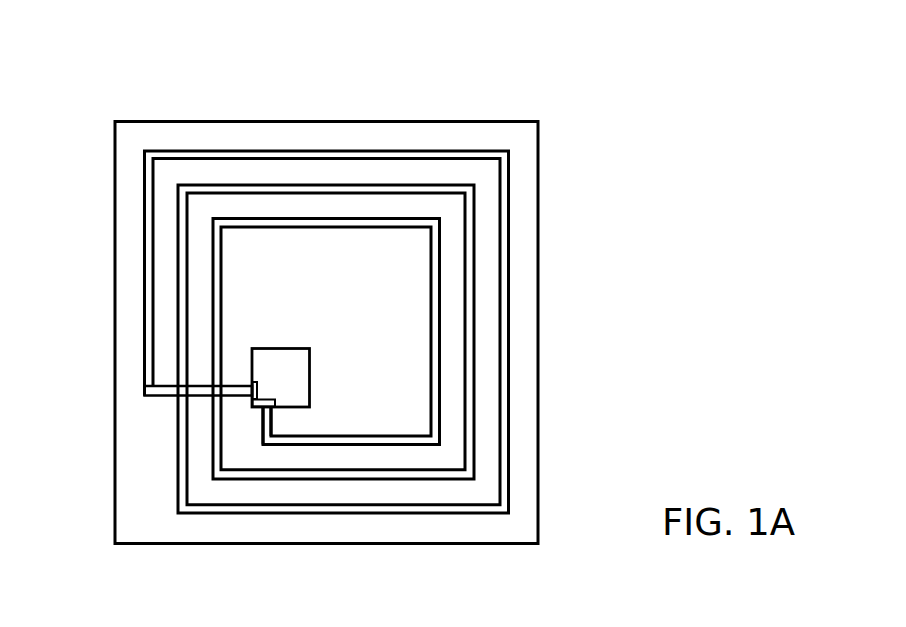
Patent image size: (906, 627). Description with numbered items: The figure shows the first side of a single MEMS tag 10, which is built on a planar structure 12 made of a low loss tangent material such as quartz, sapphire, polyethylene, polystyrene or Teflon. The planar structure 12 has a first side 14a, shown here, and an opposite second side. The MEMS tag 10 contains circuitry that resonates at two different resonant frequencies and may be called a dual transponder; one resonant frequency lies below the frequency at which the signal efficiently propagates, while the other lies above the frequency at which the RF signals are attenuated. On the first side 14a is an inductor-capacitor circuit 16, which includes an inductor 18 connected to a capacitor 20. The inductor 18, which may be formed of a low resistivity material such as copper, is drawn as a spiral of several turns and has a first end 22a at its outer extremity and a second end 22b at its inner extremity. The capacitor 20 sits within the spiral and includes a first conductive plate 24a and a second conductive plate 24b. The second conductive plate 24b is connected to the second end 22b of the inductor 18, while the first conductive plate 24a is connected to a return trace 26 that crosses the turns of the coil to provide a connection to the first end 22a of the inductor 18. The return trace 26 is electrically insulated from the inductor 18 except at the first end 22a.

The MEMS tag 10 is at (327, 291).
The planar structure 12 is at (330, 304).
The first side 14a is at (447, 132).
The inductor-capacitor circuit 16 is at (385, 332).
The inductor 18 is at (508, 205).
The capacitor 20 is at (321, 359).
The first end 22a is at (145, 389).
The second end 22b is at (257, 412).
The first conductive plate 24a is at (258, 389).
The second conductive plate 24b is at (262, 400).
The return trace 26 is at (195, 378).